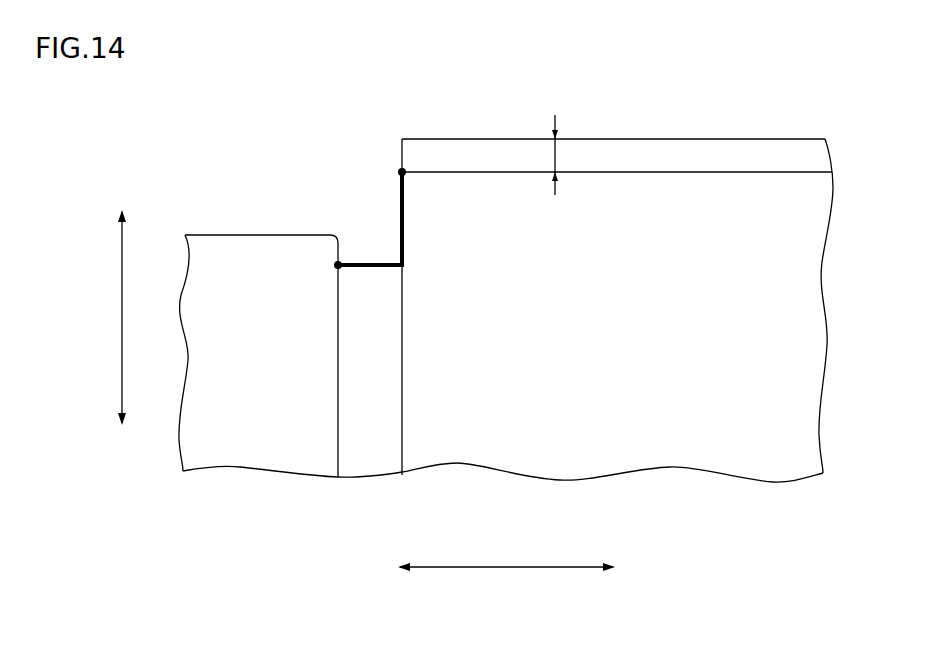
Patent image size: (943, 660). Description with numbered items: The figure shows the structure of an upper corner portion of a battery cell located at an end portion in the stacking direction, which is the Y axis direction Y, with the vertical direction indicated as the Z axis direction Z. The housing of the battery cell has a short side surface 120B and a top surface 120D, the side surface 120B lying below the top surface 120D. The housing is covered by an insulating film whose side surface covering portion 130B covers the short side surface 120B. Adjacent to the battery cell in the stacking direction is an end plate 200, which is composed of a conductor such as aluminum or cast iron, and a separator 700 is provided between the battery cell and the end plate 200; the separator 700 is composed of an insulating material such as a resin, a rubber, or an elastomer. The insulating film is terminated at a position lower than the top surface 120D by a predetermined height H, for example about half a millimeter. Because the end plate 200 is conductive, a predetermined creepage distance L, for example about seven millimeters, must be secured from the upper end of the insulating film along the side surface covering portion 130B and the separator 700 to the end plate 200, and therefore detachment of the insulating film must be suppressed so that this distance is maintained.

The top surface 120D is at (622, 139).
The side surface 120B is at (710, 157).
The side surface covering portion 130B is at (615, 443).
The end plate 200 is at (258, 443).
The separator 700 is at (370, 443).
The creepage distance L is at (397, 201).
The predetermined height H is at (553, 157).
The Z axis direction Z is at (118, 320).
The Y axis direction Y is at (507, 568).